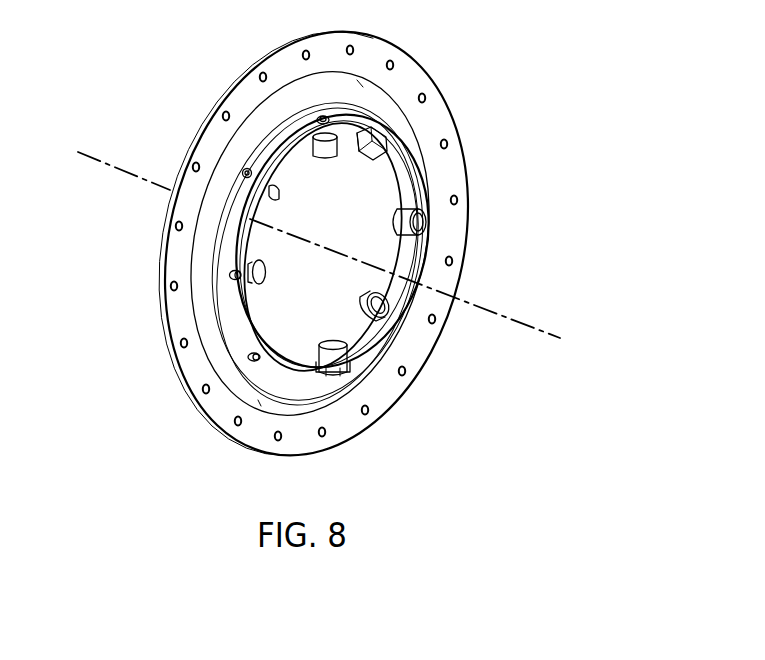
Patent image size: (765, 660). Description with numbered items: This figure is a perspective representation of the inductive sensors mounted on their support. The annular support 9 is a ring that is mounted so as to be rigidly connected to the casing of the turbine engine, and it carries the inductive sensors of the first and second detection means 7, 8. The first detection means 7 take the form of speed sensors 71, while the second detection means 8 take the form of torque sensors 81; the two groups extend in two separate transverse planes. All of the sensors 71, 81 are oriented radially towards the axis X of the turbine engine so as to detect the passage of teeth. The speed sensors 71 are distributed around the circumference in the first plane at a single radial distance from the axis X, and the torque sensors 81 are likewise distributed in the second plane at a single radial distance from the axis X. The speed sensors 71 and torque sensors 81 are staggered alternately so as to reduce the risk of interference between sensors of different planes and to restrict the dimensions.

The annular support 9 is at (196, 138).
The first detection means 7 is at (521, 70).
The speed sensor 71 is at (331, 147).
The second detection means 8 is at (487, 330).
The torque sensor 81 is at (278, 191).
The axis of the turbine engine X is at (326, 245).